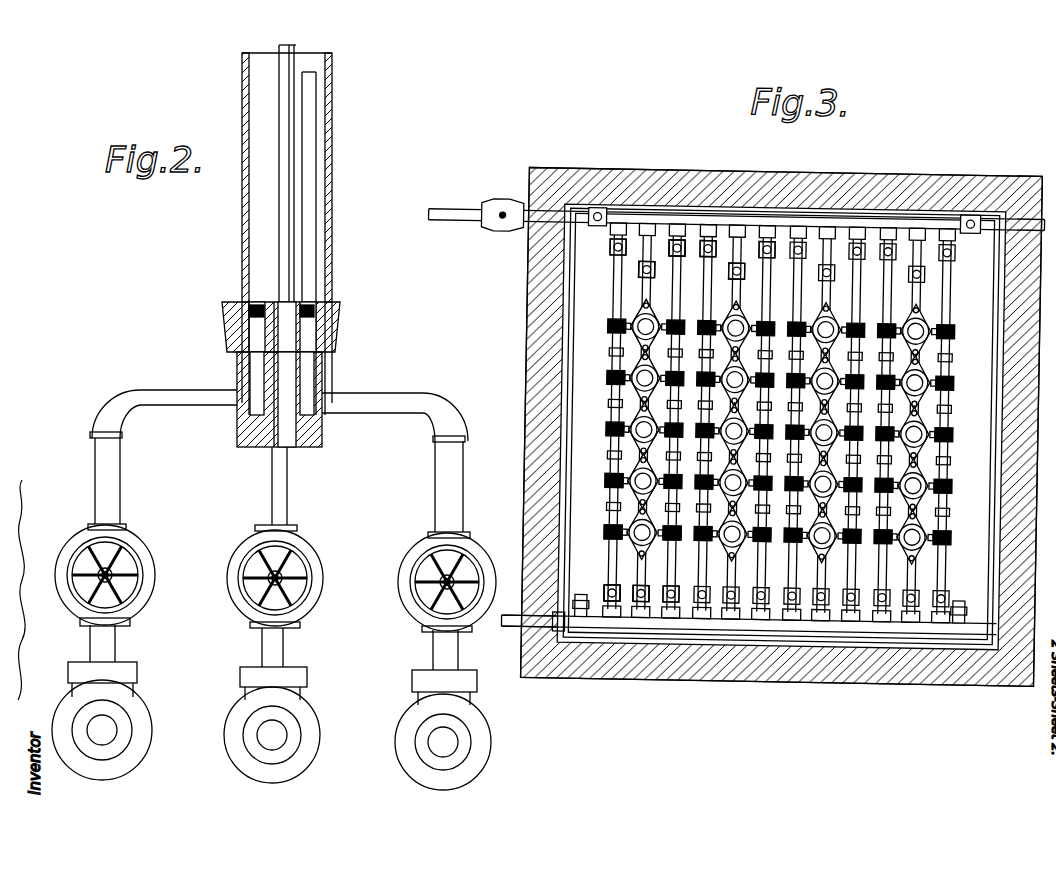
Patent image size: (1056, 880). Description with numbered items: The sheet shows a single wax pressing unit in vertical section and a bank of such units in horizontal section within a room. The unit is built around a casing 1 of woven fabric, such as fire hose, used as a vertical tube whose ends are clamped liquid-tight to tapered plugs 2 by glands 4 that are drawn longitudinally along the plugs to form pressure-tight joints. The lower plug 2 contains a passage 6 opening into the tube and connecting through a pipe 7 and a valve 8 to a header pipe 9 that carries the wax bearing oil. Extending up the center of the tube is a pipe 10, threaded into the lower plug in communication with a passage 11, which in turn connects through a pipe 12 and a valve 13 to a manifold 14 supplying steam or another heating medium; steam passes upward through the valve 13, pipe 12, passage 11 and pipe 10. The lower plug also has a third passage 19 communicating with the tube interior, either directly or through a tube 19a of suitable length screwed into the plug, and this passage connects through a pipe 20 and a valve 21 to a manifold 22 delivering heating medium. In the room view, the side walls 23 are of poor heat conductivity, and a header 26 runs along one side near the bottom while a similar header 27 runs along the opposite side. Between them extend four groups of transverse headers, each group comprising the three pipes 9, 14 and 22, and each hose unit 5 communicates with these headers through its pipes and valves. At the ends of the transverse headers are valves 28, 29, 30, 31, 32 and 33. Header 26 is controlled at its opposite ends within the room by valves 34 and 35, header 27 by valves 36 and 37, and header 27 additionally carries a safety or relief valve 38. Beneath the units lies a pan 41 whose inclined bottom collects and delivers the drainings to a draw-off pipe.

In FIG. 2, the casing 1 is at (240, 180).
In FIG. 2, the tapered plug 2 is at (235, 373).
In FIG. 3, the tapered plug 2 is at (650, 322).
In FIG. 2, the gland 4 is at (337, 318).
In FIG. 3, the gland 4 is at (556, 568).
In FIG. 3, the tube unit 5 is at (776, 157).
In FIG. 2, the passage 6 is at (258, 357).
In FIG. 3, the passage 6 is at (568, 636).
In FIG. 2, the pipe 7 is at (162, 390).
In FIG. 2, the valve 8 is at (130, 566).
In FIG. 3, the valve 8 is at (606, 488).
In FIG. 2, the header pipe 9 is at (108, 730).
In FIG. 3, the header pipe 9 is at (606, 250).
In FIG. 2, the pipe 10 is at (287, 101).
In FIG. 2, the passage 11 is at (280, 368).
In FIG. 2, the pipe 12 is at (272, 490).
In FIG. 2, the valve 13 is at (305, 593).
In FIG. 2, the manifold 14 is at (292, 727).
In FIG. 3, the manifold 14 is at (644, 264).
In FIG. 2, the third passage 19 is at (305, 343).
In FIG. 2, the tube 19a is at (305, 157).
In FIG. 2, the pipe 20 is at (375, 405).
In FIG. 2, the valve 21 is at (430, 572).
In FIG. 3, the valve 21 is at (690, 550).
In FIG. 2, the manifold 22 is at (428, 740).
In FIG. 3, the manifold 22 is at (678, 248).
In FIG. 3, the side wall 23 is at (902, 190).
In FIG. 3, the header pipe 26 is at (510, 633).
In FIG. 3, the header pipe 27 is at (530, 215).
In FIG. 3, the valve 28 is at (608, 598).
In FIG. 3, the valve 29 is at (640, 588).
In FIG. 3, the valve 30 is at (690, 640).
In FIG. 3, the valve 31 is at (714, 250).
In FIG. 3, the valve 32 is at (636, 272).
In FIG. 3, the valve 33 is at (680, 252).
In FIG. 3, the valve 34 is at (588, 622).
In FIG. 3, the valve 35 is at (962, 606).
In FIG. 3, the valve 36 is at (598, 212).
In FIG. 3, the valve 37 is at (968, 231).
In FIG. 3, the safety valve 38 is at (500, 224).
In FIG. 3, the pan 41 is at (806, 212).